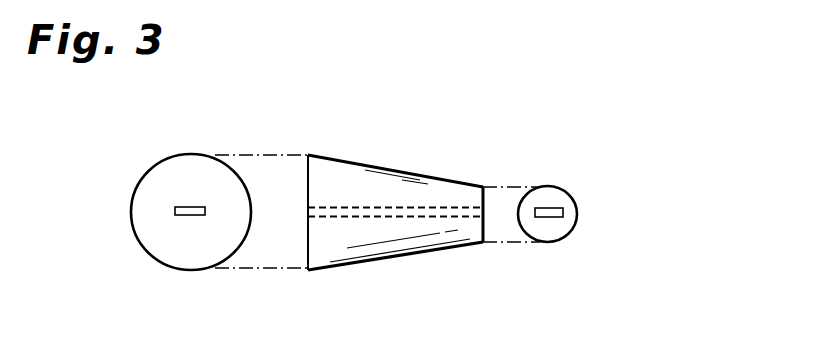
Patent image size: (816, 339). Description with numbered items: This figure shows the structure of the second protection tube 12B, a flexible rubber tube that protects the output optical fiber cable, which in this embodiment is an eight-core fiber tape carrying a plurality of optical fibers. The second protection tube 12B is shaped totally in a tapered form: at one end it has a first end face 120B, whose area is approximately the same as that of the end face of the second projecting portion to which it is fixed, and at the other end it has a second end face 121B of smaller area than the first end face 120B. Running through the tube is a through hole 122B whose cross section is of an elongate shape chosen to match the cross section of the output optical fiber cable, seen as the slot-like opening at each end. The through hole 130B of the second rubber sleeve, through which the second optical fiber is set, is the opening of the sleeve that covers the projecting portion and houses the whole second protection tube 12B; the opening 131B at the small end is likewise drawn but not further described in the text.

The second protection tube 12B is at (405, 173).
The first end face 120B is at (135, 192).
The second end face 121B is at (485, 203).
The through hole 122B is at (412, 218).
The through hole 130B is at (190, 215).
The slot in small end 131B is at (548, 217).